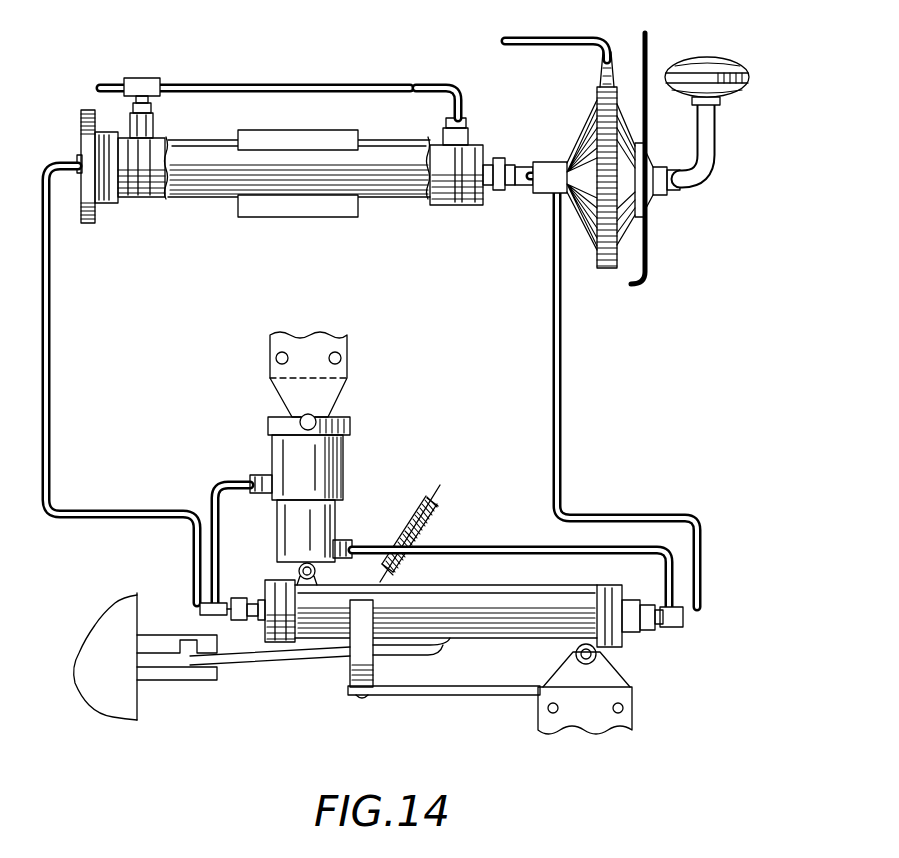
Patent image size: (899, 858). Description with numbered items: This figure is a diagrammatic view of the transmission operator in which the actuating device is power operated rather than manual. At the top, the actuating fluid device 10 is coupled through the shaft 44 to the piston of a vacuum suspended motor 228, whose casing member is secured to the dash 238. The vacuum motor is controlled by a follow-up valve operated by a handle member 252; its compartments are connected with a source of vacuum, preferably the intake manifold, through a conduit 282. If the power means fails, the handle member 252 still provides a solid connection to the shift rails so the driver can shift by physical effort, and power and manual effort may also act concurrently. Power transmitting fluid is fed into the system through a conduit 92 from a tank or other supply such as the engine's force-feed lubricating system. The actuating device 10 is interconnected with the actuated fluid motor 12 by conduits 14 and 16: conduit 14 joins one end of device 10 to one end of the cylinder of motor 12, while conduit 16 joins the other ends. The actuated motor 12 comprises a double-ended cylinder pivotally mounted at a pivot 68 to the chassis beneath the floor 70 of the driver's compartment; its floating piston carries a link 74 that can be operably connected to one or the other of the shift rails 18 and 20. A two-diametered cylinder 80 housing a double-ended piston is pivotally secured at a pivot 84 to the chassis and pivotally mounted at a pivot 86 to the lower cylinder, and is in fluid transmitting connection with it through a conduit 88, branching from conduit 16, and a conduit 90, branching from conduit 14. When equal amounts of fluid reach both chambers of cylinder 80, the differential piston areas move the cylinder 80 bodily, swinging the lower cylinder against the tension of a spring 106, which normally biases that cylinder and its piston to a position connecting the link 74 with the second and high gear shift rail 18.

The actuating fluid device 10 is at (380, 197).
The actuated fluid motor 12 is at (330, 620).
The conduit 14 is at (559, 355).
The conduit 16 is at (50, 300).
The shift rail 18 is at (150, 640).
The shift rail 20 is at (159, 674).
The shaft 44 is at (521, 190).
The pivot 68 is at (576, 653).
The floor 70 is at (585, 722).
The link 74 is at (405, 648).
The two-diametered cylinder 80 is at (330, 470).
The pivot 84 is at (320, 420).
The pivot 86 is at (298, 571).
The conduit 88 is at (224, 480).
The conduit 90 is at (478, 550).
The conduit 92 is at (305, 90).
The spring 106 is at (430, 517).
The vacuum suspended motor 228 is at (591, 145).
The dash 238 is at (650, 253).
The handle member 252 is at (709, 135).
The conduit 282 is at (573, 40).